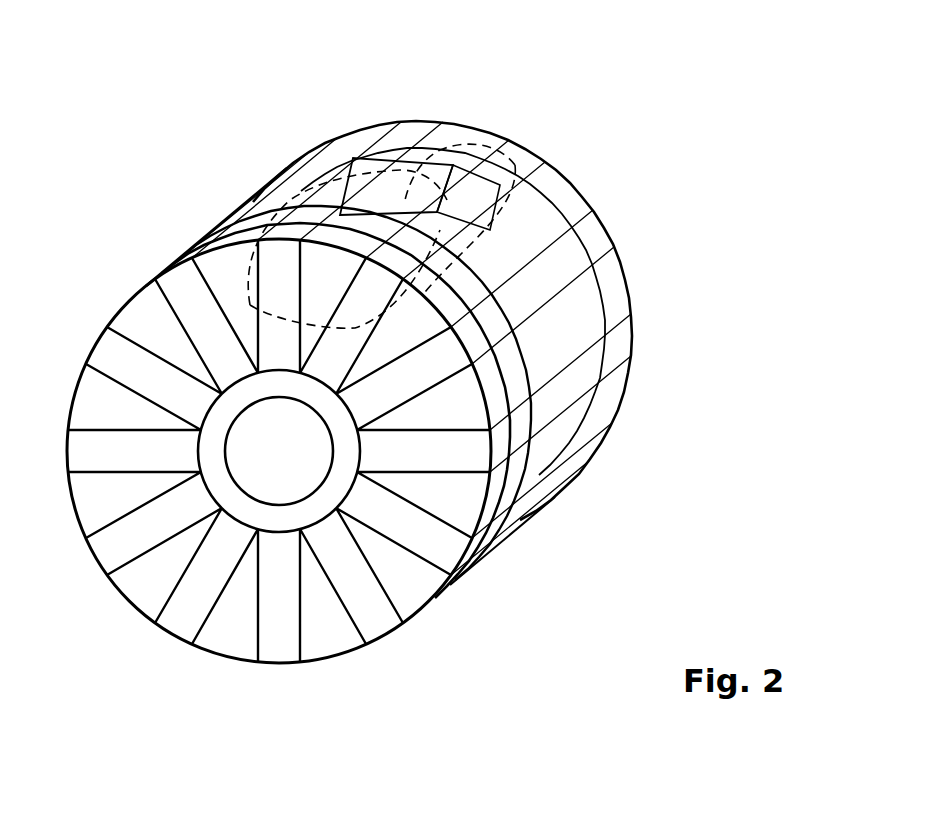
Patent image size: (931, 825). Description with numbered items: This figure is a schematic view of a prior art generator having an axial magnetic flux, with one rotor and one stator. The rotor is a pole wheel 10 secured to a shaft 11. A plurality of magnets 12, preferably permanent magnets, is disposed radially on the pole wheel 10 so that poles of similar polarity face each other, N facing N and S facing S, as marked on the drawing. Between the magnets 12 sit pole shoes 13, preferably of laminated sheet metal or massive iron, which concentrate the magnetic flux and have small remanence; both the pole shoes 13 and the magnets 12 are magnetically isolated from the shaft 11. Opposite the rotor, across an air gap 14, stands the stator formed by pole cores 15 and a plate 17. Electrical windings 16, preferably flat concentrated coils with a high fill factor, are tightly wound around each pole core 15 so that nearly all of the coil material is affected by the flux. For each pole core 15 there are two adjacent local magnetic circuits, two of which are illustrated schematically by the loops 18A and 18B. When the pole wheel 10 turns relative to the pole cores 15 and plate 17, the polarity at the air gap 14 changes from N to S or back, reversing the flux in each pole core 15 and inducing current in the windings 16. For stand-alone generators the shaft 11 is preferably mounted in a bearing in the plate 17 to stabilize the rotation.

The pole wheel 10 is at (350, 664).
The shaft 11 is at (306, 475).
The magnets 12 is at (277, 348).
The pole shoes 13 is at (316, 290).
The air gap 14 is at (333, 222).
The pole core 15 is at (432, 160).
The electrical windings 16 is at (403, 185).
The plate 17 is at (622, 333).
The loop 18A is at (365, 133).
The loop 18B is at (515, 165).